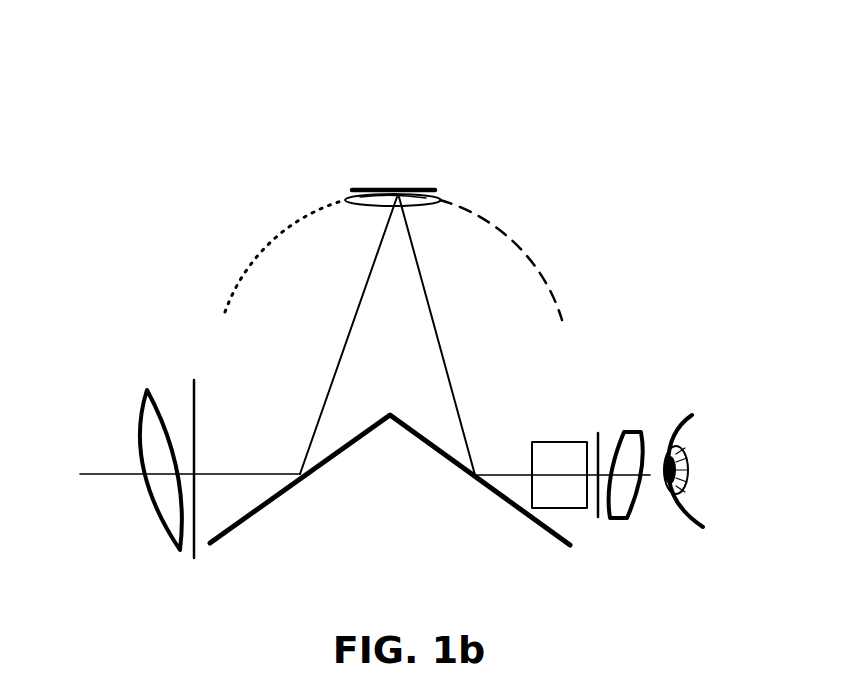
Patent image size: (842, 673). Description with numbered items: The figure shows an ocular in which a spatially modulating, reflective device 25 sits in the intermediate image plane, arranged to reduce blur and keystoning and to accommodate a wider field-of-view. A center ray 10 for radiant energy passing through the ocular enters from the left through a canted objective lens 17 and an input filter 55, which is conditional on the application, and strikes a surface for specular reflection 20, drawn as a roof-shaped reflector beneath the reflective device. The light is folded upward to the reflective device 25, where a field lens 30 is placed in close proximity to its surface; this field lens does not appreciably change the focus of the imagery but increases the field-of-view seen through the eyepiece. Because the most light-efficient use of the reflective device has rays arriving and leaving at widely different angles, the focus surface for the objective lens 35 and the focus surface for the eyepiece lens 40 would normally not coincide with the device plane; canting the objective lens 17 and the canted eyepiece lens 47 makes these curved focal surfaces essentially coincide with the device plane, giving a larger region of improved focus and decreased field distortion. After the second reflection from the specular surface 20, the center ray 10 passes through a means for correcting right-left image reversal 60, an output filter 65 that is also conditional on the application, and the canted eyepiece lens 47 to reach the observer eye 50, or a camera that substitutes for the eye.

The center ray 10 is at (348, 474).
The canted objective lens 17 is at (150, 476).
The surface for specular reflection 20 is at (443, 472).
The spatially modulating, reflective device 25 is at (397, 178).
The field lens 30 is at (432, 214).
The focus surface for objective lens 35 is at (522, 235).
The focus surface for eyepiece lens 40 is at (268, 233).
The canted eyepiece lens 47 is at (635, 494).
The observer eye 50 is at (705, 475).
The input filter 55 is at (200, 402).
The means for correcting right-left image reversal 60 is at (544, 465).
The output filter 65 is at (598, 432).